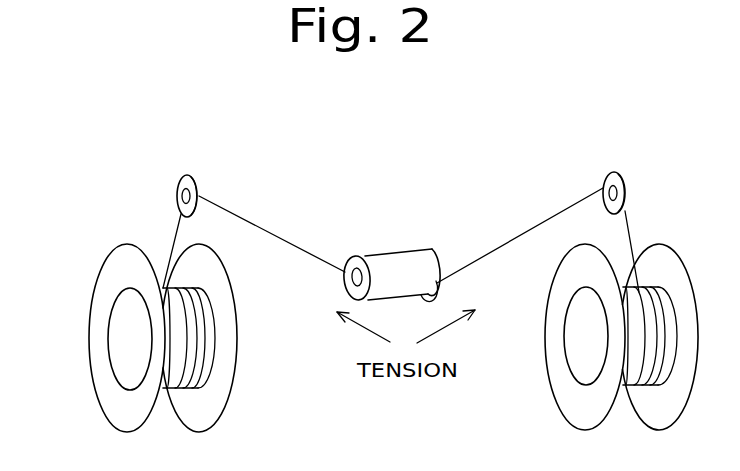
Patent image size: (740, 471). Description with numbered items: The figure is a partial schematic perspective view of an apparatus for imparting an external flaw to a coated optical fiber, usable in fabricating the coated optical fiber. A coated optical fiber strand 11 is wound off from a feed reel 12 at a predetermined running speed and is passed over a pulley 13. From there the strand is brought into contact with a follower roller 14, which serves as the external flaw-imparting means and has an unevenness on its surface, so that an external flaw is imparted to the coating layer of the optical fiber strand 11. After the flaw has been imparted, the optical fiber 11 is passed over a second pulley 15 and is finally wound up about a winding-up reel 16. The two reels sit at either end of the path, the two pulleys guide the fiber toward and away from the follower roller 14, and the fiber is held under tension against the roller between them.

The coated optical fiber strand 11 is at (172, 234).
The feed reel 12 is at (92, 315).
The pulley 13 is at (192, 175).
The follower roller 14 is at (395, 252).
The pulley 15 is at (626, 172).
The winding-up reel 16 is at (687, 280).